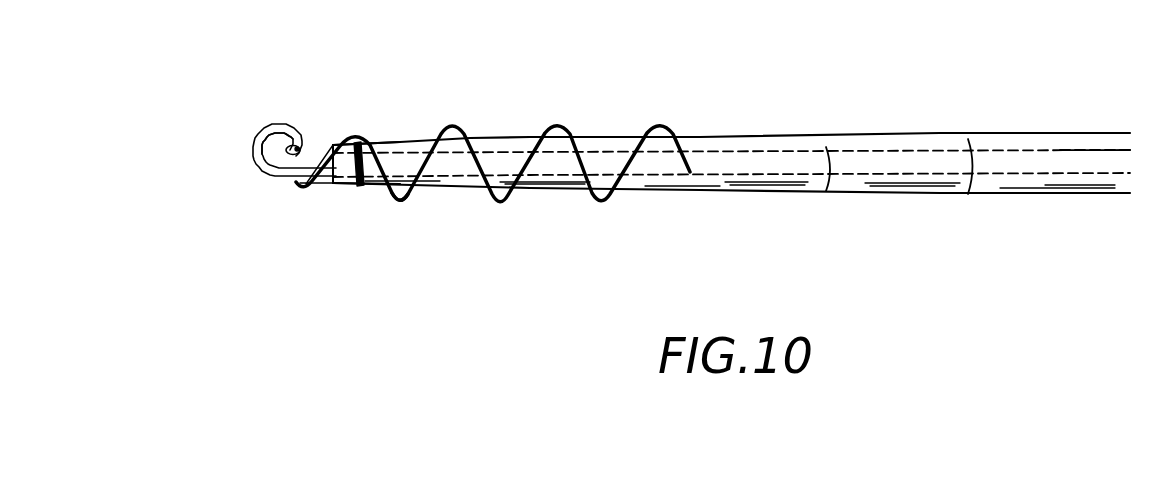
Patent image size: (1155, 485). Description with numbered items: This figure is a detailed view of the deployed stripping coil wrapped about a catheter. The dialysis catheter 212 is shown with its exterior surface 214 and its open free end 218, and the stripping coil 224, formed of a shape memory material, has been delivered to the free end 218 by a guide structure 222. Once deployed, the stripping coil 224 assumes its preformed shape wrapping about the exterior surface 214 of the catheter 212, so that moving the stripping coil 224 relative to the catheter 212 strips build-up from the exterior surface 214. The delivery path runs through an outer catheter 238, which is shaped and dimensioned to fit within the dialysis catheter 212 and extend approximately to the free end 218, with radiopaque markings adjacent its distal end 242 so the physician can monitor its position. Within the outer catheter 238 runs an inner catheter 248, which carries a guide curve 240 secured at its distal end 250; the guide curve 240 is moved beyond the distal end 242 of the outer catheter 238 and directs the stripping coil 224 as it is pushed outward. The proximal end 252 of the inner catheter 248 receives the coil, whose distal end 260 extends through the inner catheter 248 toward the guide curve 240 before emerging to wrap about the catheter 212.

The catheter 212 is at (773, 192).
The exterior surface 214 is at (748, 151).
The free end 218 is at (457, 167).
The guide structure 222 is at (336, 146).
The stripping coil 224 is at (397, 200).
The outer catheter 238 is at (393, 144).
The guide curve 240 is at (274, 126).
The distal end 242 is at (357, 187).
The inner catheter 248 is at (294, 175).
The distal end 250 is at (256, 163).
The proximal end 252 is at (1085, 158).
The distal end 260 is at (701, 192).